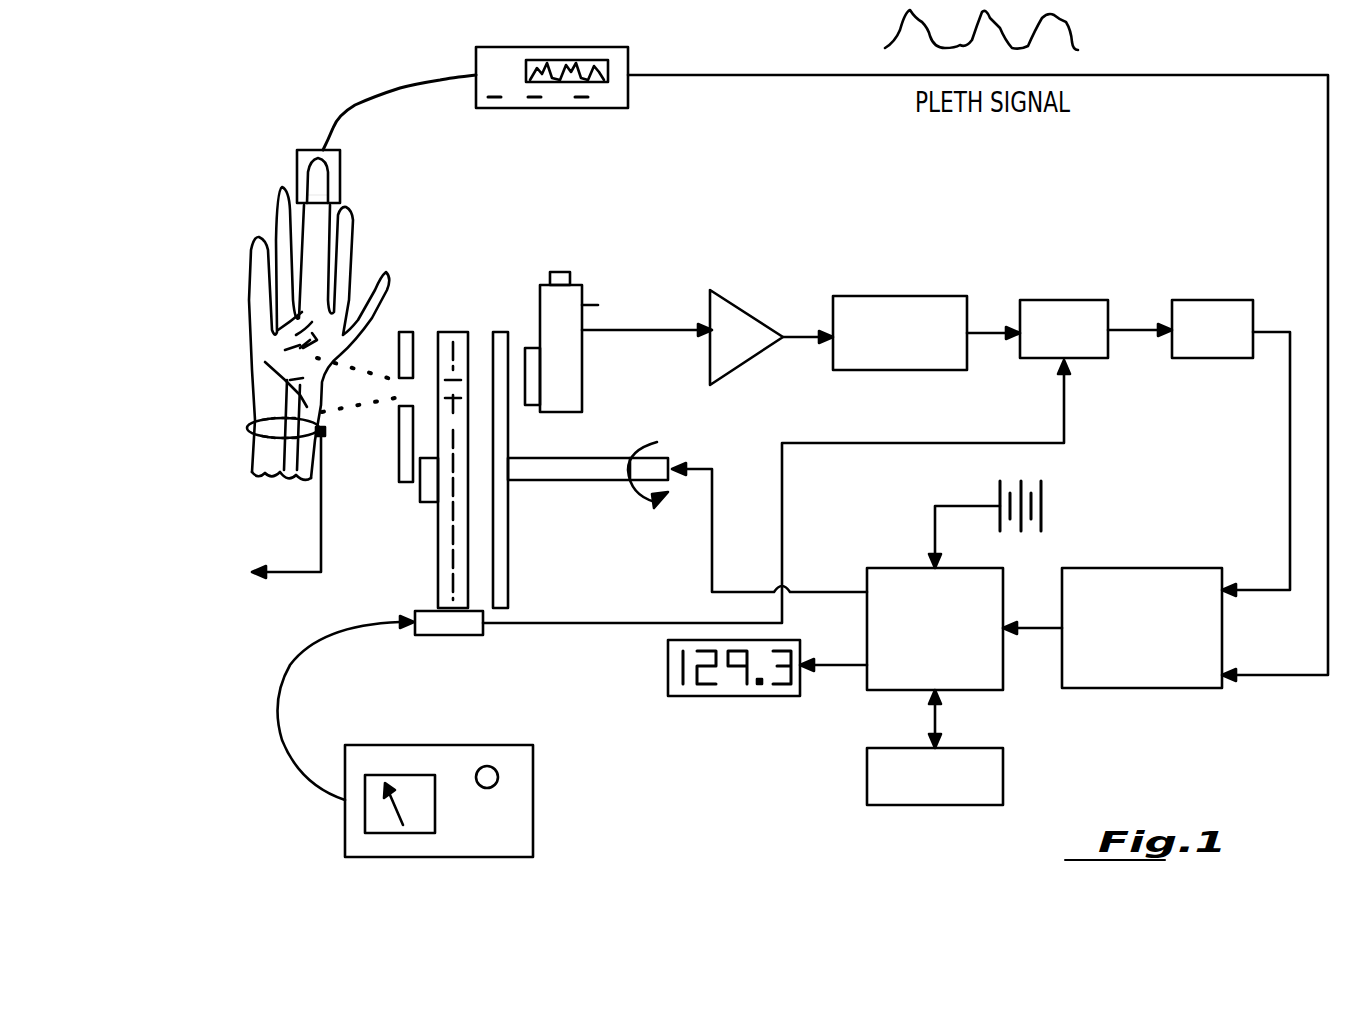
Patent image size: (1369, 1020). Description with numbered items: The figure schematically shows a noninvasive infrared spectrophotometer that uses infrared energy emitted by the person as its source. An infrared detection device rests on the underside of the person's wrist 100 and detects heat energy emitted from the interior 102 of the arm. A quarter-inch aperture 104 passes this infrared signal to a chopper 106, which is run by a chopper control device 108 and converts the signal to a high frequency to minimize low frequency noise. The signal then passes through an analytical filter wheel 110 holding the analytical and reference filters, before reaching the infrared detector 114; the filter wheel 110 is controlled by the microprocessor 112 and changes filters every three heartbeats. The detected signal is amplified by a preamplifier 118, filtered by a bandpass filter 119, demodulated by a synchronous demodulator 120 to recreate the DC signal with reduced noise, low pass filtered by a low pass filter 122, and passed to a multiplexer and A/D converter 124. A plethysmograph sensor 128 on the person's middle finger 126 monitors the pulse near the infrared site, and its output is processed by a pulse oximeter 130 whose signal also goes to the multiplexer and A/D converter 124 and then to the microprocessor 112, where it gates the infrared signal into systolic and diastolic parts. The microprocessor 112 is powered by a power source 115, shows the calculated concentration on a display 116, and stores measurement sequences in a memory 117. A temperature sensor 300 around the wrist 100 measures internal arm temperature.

The wrist 100 is at (270, 380).
The interior of the person's arm 102 is at (290, 410).
The aperture 104 is at (413, 272).
The chopper 106 is at (448, 636).
The chopper control device 108 is at (525, 806).
The filter wheel 110 is at (508, 508).
The microprocessor 112 is at (1000, 672).
The infrared detector 114 is at (577, 293).
The power source 115 is at (1047, 510).
The display 116 is at (728, 690).
The memory 117 is at (872, 768).
The preamplifier 118 is at (740, 352).
The bandpass filter 119 is at (907, 371).
The synchronous demodulator 120 is at (1092, 272).
The low pass filter 122 is at (1210, 356).
The multiplexer and A/D converter 124 is at (1178, 680).
The middle finger 126 is at (302, 200).
The plethysmograph sensor 128 is at (338, 163).
The pulse oximeter 130 is at (555, 98).
The temperature sensor 300 is at (325, 432).